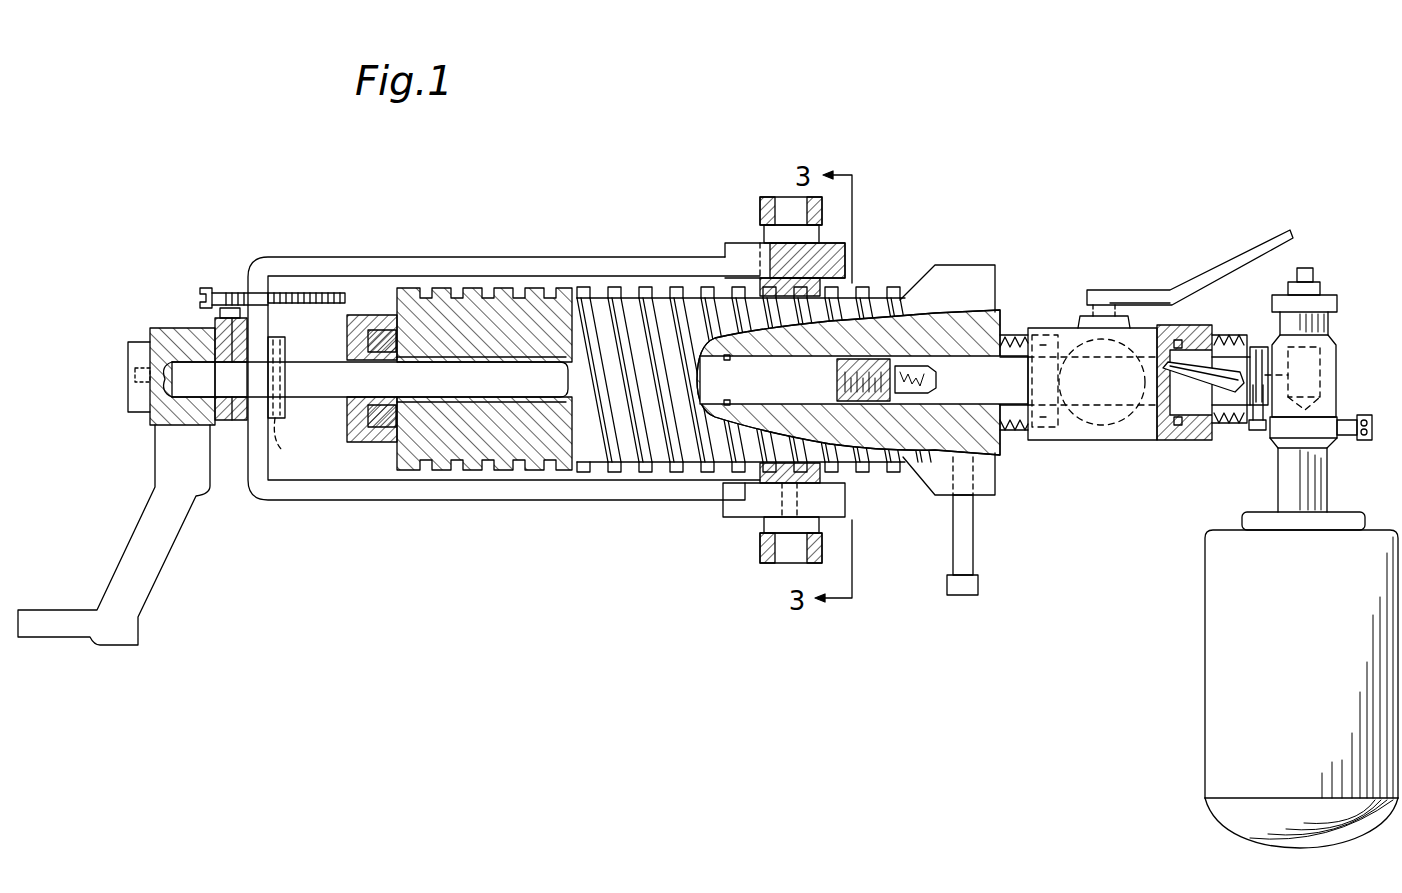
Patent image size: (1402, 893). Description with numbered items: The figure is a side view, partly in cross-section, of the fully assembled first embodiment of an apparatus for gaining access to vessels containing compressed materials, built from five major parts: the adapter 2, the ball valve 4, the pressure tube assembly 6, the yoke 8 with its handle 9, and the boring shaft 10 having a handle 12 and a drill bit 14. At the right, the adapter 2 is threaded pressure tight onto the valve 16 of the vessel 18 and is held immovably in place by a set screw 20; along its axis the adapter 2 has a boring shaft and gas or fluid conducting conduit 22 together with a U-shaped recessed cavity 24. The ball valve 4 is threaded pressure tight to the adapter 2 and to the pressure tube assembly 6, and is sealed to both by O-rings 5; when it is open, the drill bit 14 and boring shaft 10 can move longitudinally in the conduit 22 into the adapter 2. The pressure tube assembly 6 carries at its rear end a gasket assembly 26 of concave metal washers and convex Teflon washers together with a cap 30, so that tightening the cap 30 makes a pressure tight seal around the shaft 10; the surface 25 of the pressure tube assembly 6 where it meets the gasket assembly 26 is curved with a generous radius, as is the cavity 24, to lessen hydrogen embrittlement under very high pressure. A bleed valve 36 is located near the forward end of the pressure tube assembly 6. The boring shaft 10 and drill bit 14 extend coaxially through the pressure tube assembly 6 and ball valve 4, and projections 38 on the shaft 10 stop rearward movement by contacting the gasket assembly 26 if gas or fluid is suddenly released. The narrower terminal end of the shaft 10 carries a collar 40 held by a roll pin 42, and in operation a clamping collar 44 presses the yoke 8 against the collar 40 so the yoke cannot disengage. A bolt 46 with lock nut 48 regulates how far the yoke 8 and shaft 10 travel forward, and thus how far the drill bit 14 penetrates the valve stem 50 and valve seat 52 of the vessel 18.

The adapter 2 is at (1220, 335).
The ball valve 4 is at (1068, 430).
The O-rings 5 is at (1058, 325).
The pressure tube assembly 6 is at (617, 295).
The yoke 8 is at (570, 488).
The handle 9 is at (760, 210).
The boring shaft 10 is at (474, 380).
The handle 12 is at (135, 543).
The drill bit 14 is at (1185, 385).
The valve 16 is at (1258, 365).
The vessel 18 is at (1215, 575).
The set screw 20 is at (1258, 432).
The conduit 22 is at (1007, 433).
The U-shaped recessed cavity 24 is at (1200, 440).
The surface 25 is at (432, 340).
The gasket assembly 26 is at (392, 340).
The cap 30 is at (362, 442).
The bleed valve 36 is at (953, 535).
The projections 38 is at (730, 359).
The collar 40 is at (286, 412).
The roll pin 42 is at (294, 443).
The clamping collar 44 is at (228, 420).
The bolt 46 is at (307, 293).
The lock nut 48 is at (275, 290).
The valve stem 50 is at (1305, 368).
The valve seat 52 is at (1320, 405).